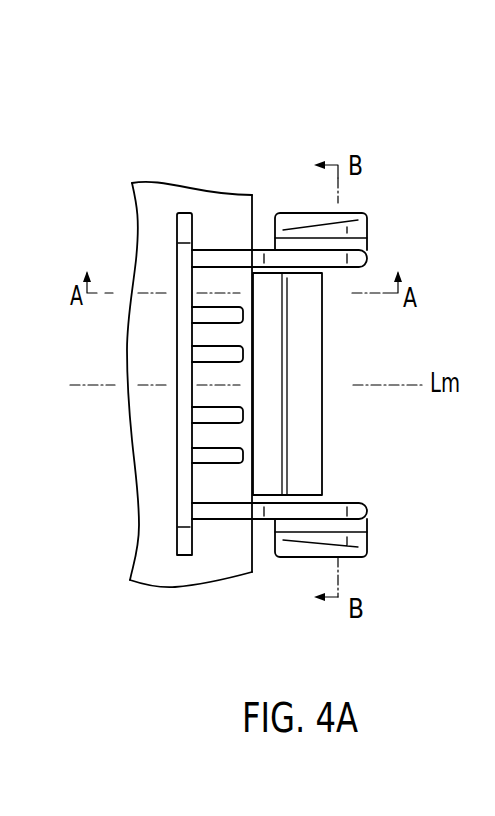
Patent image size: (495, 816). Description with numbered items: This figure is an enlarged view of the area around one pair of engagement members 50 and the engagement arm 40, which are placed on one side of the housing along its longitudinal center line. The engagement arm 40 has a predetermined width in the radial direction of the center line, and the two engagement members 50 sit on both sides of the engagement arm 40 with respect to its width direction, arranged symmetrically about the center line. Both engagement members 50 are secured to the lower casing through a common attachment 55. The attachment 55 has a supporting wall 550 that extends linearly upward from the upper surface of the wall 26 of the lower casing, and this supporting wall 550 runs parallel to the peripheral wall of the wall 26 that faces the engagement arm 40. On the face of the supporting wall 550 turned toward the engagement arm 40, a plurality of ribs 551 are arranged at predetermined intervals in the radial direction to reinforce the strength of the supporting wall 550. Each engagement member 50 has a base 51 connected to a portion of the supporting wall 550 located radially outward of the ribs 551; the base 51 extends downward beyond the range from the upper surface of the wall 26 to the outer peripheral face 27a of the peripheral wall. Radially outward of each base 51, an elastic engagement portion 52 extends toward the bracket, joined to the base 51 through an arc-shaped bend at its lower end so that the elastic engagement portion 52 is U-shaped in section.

The wall 26 is at (155, 195).
The outer peripheral face 27a is at (271, 588).
The engagement arm 40 is at (325, 455).
The engagement member 50 is at (320, 316).
The base 51 is at (367, 258).
The elastic engagement portion 52 is at (367, 223).
The attachment 55 is at (168, 323).
The supporting wall 550 is at (182, 492).
The rib 551 is at (207, 316).